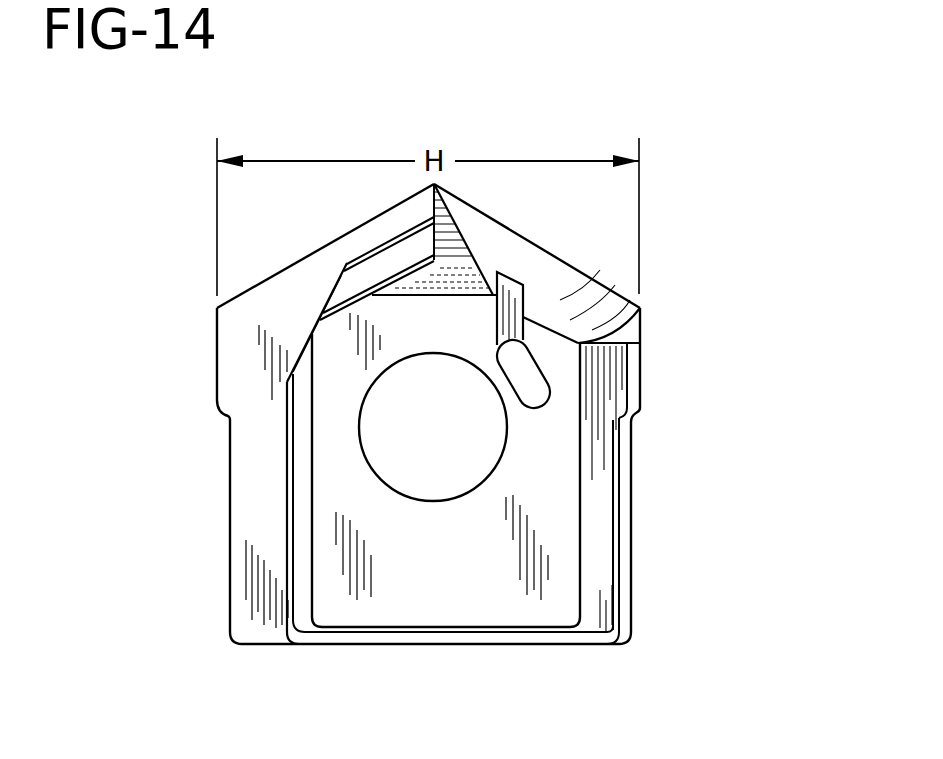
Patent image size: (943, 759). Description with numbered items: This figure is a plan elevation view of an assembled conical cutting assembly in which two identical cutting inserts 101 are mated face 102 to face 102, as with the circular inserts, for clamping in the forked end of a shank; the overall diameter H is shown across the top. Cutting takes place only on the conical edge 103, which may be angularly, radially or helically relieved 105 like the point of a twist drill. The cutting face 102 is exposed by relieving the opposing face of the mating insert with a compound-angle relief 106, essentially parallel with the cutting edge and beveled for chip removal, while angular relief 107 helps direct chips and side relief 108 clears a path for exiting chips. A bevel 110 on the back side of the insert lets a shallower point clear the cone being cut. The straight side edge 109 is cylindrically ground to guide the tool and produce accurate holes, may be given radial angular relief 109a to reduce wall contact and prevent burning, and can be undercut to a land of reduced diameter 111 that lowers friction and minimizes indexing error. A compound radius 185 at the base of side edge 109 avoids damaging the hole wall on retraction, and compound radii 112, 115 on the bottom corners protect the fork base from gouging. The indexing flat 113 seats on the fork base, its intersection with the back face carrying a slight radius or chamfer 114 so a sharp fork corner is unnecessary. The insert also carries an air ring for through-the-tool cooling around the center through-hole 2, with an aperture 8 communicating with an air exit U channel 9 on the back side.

The center through-hole 2 is at (420, 495).
The aperture 8 is at (527, 375).
The air exit U channel 9 is at (510, 290).
The cutting insert 101 is at (545, 534).
The cutting face 102 is at (246, 375).
The conical edge 103 is at (323, 245).
The relief 105 is at (567, 287).
The relief 106 is at (398, 256).
The angular relief 107 is at (333, 294).
The side relief 108 is at (287, 522).
The straight side edge 109 is at (641, 363).
The radial angular relief 109a is at (615, 382).
The bevel 110 is at (448, 252).
The land of reduced diameter 111 is at (631, 487).
The compound radius 112 is at (293, 640).
The indexing flat 113 is at (460, 645).
The chamfer 114 is at (545, 634).
The compound radius 115 is at (229, 633).
The compound radius 185 is at (633, 415).